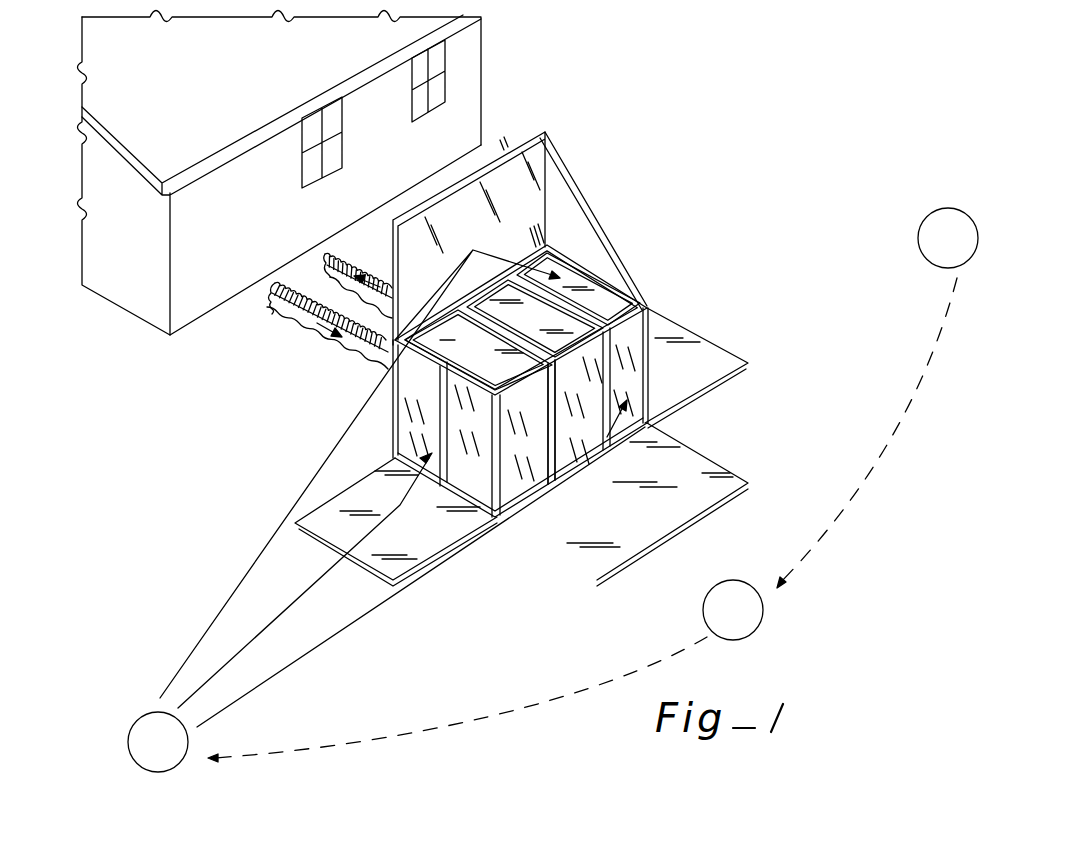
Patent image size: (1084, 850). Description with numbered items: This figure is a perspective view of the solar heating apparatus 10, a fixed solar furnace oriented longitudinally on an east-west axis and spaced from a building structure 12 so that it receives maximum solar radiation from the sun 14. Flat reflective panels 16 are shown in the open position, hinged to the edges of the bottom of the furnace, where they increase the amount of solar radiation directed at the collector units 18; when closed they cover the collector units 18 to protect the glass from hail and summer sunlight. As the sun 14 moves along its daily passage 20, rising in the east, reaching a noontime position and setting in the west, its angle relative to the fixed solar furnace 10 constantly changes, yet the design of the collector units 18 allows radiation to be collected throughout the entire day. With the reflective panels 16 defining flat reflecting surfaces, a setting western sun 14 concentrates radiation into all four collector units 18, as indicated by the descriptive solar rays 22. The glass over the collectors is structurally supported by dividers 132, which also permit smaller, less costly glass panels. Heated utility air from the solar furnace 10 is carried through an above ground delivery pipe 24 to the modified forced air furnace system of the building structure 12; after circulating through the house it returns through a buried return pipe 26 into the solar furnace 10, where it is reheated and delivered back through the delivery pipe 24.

The solar heating apparatus 10 is at (608, 188).
The building structure 12 is at (488, 78).
The sun 14 is at (162, 774).
The reflective panels 16 is at (530, 153).
The collector units 18 is at (396, 437).
The daily passage 20 is at (857, 492).
The solar rays 22 is at (210, 632).
The delivery pipe 24 is at (347, 265).
The return pipe 26 is at (297, 315).
The dividers 132 is at (552, 468).